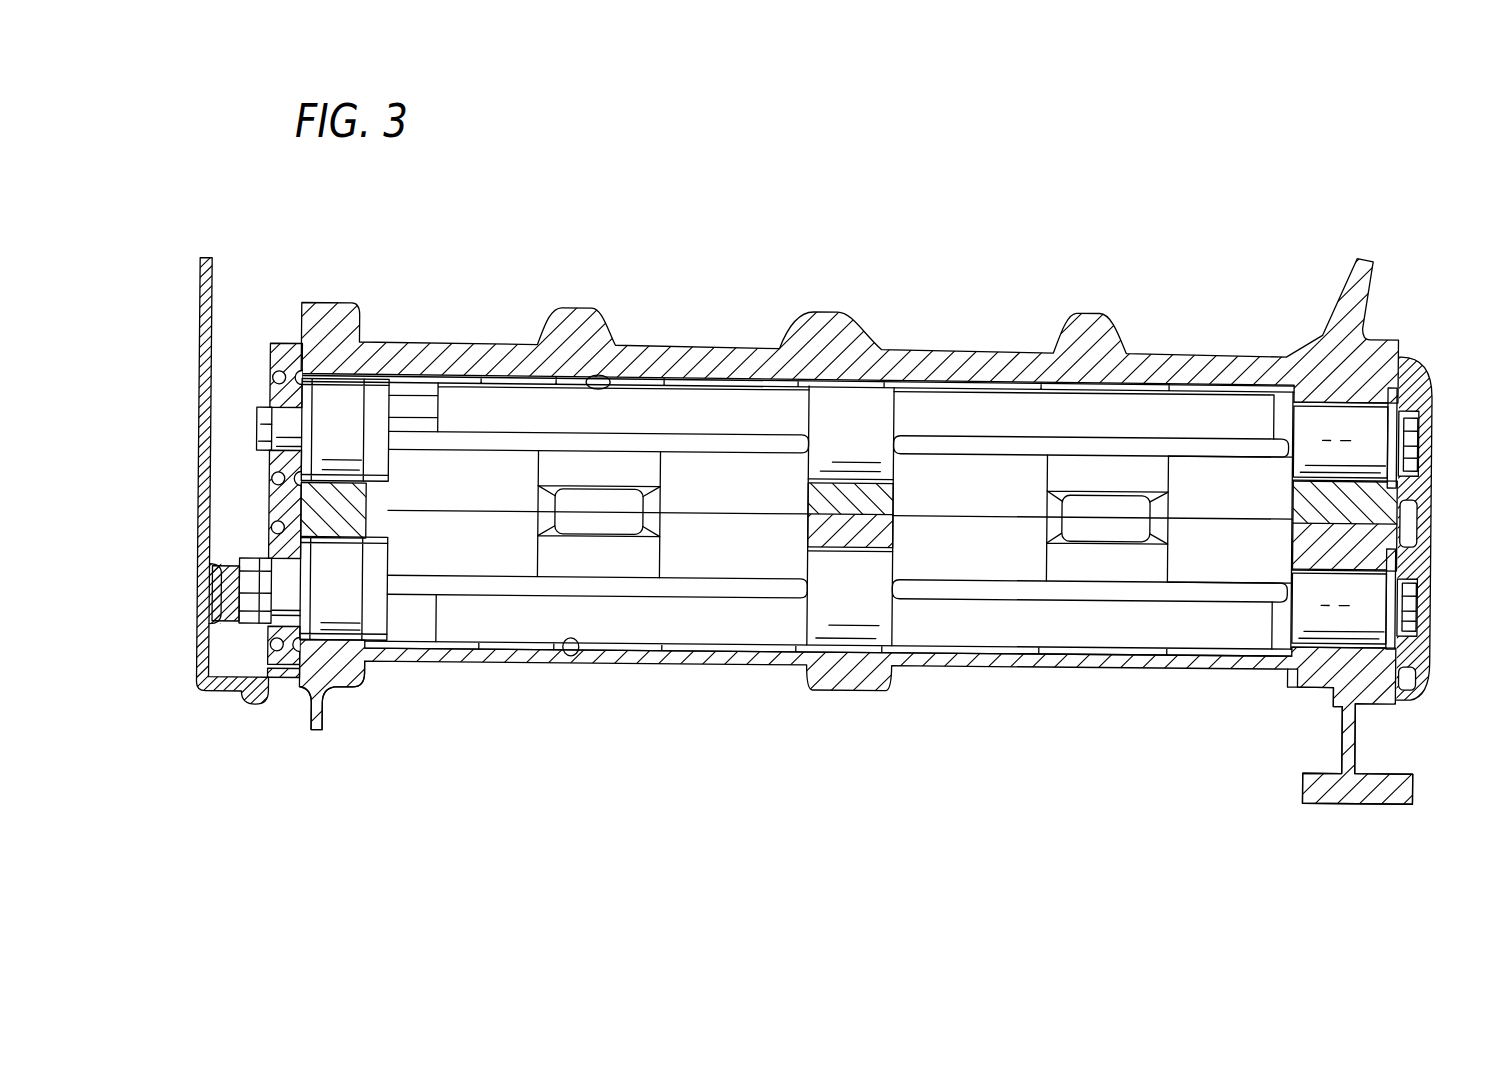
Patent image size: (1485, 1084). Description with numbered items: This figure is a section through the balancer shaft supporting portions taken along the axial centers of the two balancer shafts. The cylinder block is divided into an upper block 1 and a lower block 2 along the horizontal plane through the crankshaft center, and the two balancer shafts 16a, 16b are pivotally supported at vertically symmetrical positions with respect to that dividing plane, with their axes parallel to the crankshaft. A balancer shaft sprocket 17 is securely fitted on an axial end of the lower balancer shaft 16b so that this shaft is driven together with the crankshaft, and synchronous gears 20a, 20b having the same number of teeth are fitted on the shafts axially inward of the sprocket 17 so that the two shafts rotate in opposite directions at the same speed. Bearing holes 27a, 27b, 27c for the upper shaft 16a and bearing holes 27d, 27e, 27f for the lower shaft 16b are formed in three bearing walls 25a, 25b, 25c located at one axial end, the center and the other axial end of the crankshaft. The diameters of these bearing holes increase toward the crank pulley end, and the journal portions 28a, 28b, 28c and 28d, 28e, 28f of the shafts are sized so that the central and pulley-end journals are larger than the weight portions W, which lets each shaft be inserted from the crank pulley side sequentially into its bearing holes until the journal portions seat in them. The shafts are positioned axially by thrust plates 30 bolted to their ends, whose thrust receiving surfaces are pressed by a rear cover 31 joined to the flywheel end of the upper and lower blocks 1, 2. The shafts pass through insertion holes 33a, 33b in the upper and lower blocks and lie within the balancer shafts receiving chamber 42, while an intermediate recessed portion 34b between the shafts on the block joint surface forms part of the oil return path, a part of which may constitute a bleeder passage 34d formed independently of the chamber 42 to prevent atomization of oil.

The upper block 1 is at (1353, 265).
The lower block 2 is at (1357, 748).
The balancer shaft 16a is at (257, 430).
The balancer shaft 16b is at (213, 605).
The balancer shaft sprocket 17 is at (248, 633).
The synchronous gear 20a is at (290, 345).
The synchronous gear 20b is at (287, 682).
The bearing wall 25a is at (337, 690).
The bearing wall 25b is at (870, 688).
The bearing wall 25c is at (1307, 683).
The bearing hole 27a is at (356, 392).
The bearing hole 27b is at (880, 392).
The bearing hole 27c is at (1272, 405).
The bearing hole 27d is at (383, 665).
The bearing hole 27e is at (805, 640).
The bearing hole 27f is at (1300, 626).
The journal portion 28a is at (358, 455).
The journal portion 28b is at (885, 468).
The journal portion 28c is at (1298, 452).
The journal portion 28d is at (360, 562).
The journal portion 28e is at (883, 568).
The journal portion 28f is at (1303, 585).
The thrust plate 30 is at (1416, 357).
The rear cover 31 is at (1420, 549).
The insertion hole 33a is at (606, 374).
The insertion hole 33b is at (577, 660).
The intermediate recessed portion 34b is at (642, 528).
The bleeder passage 34d is at (1107, 490).
The balancer shafts receiving chamber 42 is at (749, 493).
The weight portion W is at (720, 398).